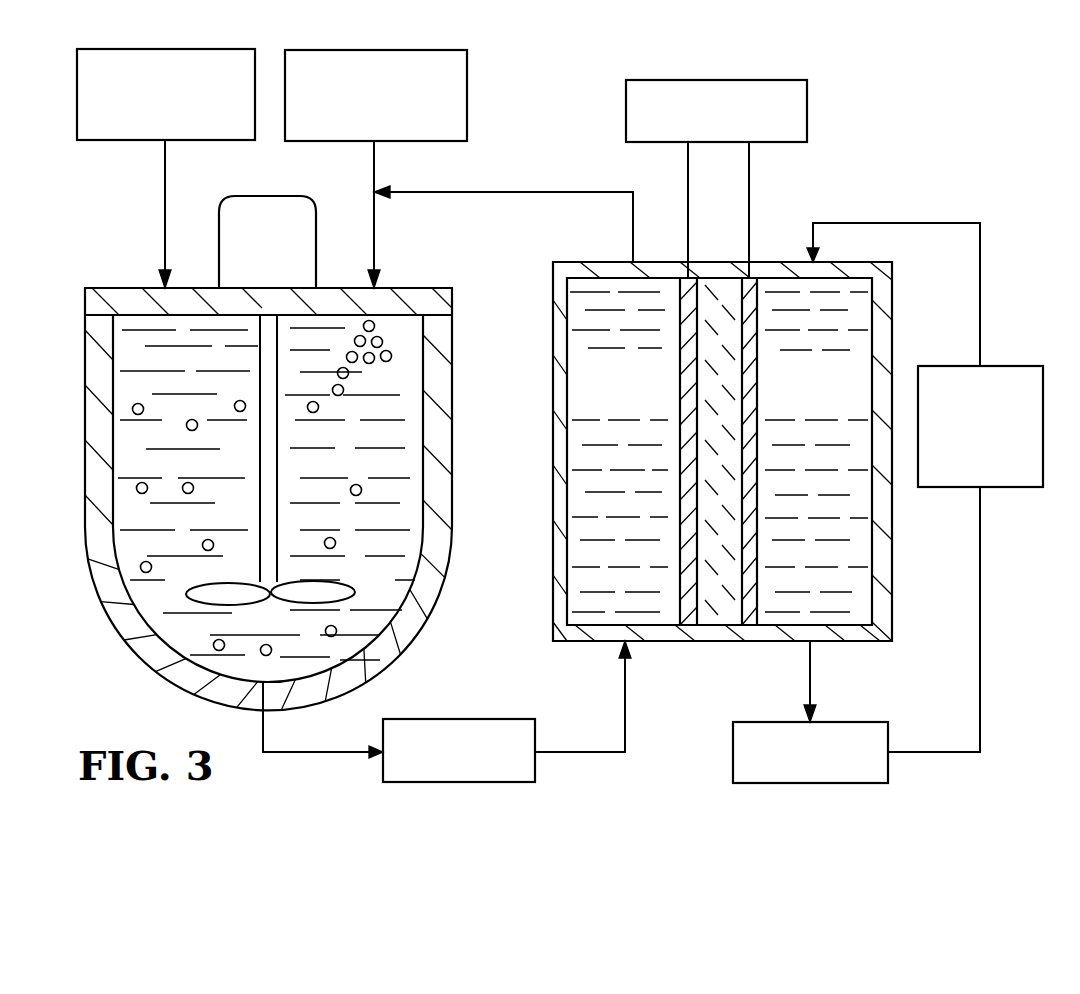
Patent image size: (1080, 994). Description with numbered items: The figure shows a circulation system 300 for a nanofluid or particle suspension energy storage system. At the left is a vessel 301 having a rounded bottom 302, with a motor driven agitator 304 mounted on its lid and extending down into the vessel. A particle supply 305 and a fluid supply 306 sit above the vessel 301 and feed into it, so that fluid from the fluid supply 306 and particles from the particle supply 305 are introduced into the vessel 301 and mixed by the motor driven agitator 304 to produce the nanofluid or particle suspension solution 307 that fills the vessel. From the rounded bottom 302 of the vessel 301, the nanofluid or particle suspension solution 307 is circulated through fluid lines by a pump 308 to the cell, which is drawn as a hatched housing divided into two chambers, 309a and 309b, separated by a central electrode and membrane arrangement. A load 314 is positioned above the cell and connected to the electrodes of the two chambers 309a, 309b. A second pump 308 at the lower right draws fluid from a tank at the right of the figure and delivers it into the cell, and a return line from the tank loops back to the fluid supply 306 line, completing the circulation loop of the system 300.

The circulation system 300 is at (558, 57).
The vessel 301 is at (452, 400).
The rounded bottom 302 is at (400, 650).
The motor driven agitator 304 is at (298, 245).
The particle supply 305 is at (108, 140).
The fluid supply 306 is at (467, 122).
The nanofluid or particle suspension solution 307 is at (395, 468).
The pump 308 is at (520, 719).
The first cell chamber electrode 309a is at (660, 399).
The second cell chamber electrode 309b is at (850, 400).
The load 314 is at (807, 118).